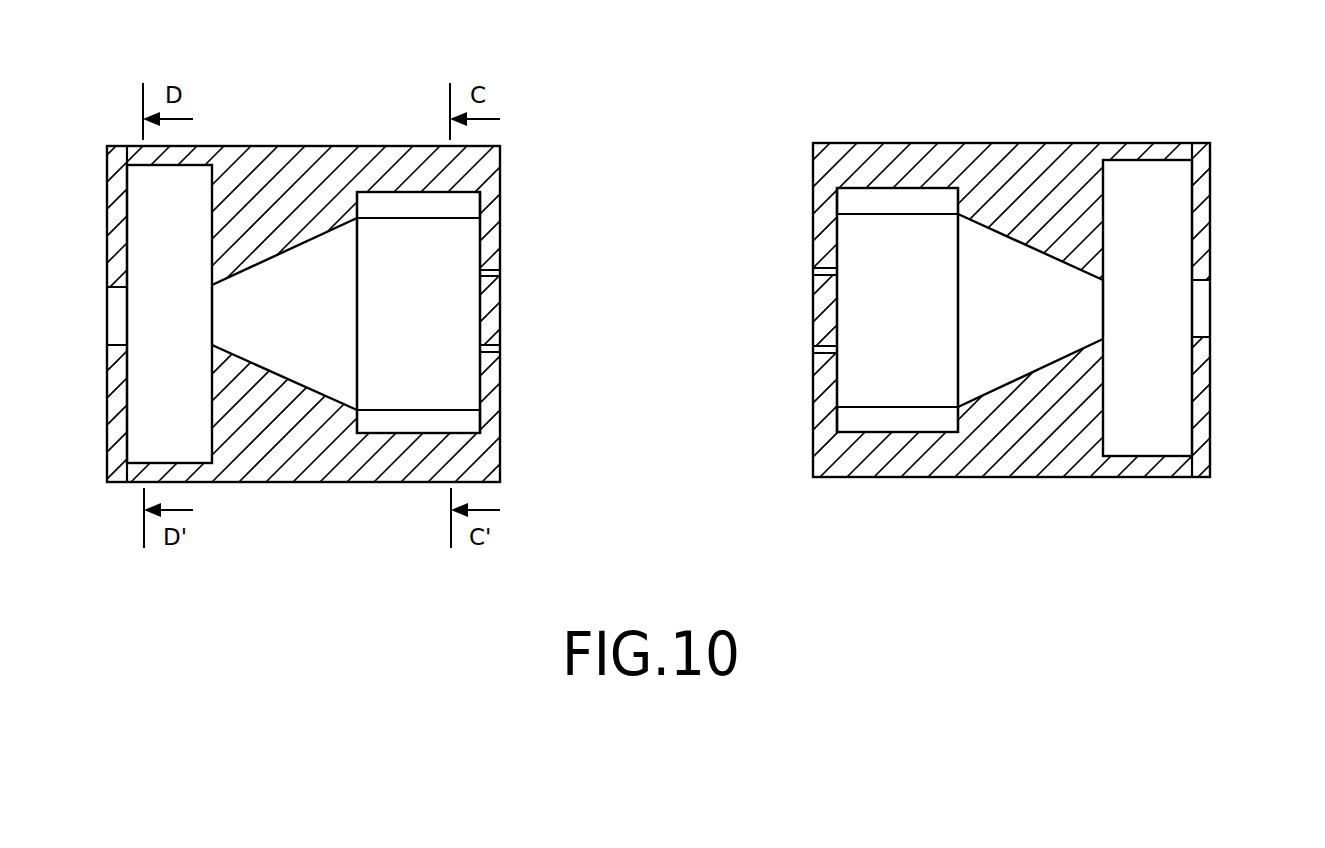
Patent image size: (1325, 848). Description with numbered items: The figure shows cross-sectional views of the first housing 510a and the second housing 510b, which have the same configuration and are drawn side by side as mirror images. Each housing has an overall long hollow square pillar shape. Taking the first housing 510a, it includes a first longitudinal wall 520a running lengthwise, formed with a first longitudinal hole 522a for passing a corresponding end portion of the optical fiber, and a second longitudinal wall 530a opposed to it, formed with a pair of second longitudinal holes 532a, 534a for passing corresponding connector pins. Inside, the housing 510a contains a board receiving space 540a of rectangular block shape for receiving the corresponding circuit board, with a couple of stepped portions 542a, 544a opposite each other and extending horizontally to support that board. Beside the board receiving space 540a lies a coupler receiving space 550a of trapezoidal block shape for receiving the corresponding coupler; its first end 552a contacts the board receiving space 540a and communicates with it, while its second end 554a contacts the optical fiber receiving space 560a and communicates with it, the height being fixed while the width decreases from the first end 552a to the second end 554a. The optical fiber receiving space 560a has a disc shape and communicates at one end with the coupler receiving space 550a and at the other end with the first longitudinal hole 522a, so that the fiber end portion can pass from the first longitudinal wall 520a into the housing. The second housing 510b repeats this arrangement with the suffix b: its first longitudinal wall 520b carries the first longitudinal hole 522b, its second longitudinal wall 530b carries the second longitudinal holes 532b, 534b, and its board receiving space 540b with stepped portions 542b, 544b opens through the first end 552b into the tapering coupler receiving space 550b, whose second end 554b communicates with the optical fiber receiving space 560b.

The first housing 510a is at (267, 457).
The first longitudinal wall 520a is at (118, 450).
The first longitudinal hole 522a is at (118, 317).
The second longitudinal wall 530a is at (490, 217).
The second longitudinal hole 532a is at (490, 273).
The second longitudinal hole 534a is at (490, 348).
The board receiving space 540a is at (398, 250).
The stepped portion 542a is at (407, 420).
The stepped portion 544a is at (480, 178).
The coupler receiving space 550a is at (295, 285).
The first end of coupler receiving space 552a is at (353, 383).
The second end of coupler receiving space 554a is at (213, 313).
The optical fiber receiving space 560a is at (148, 207).
The second housing 510b is at (1045, 443).
The first longitudinal wall 520b is at (1197, 443).
The first longitudinal hole 522b is at (1200, 305).
The second longitudinal wall 530b is at (820, 212).
The second longitudinal hole 532b is at (820, 271).
The second longitudinal hole 534b is at (820, 350).
The board receiving space 540b is at (917, 247).
The stepped portion 542b is at (897, 418).
The stepped portion 544b is at (853, 192).
The coupler receiving space 550b is at (1018, 278).
The first end of coupler receiving space 552b is at (960, 377).
The second end of coupler receiving space 554b is at (1103, 307).
The optical fiber receiving space 560b is at (1172, 200).